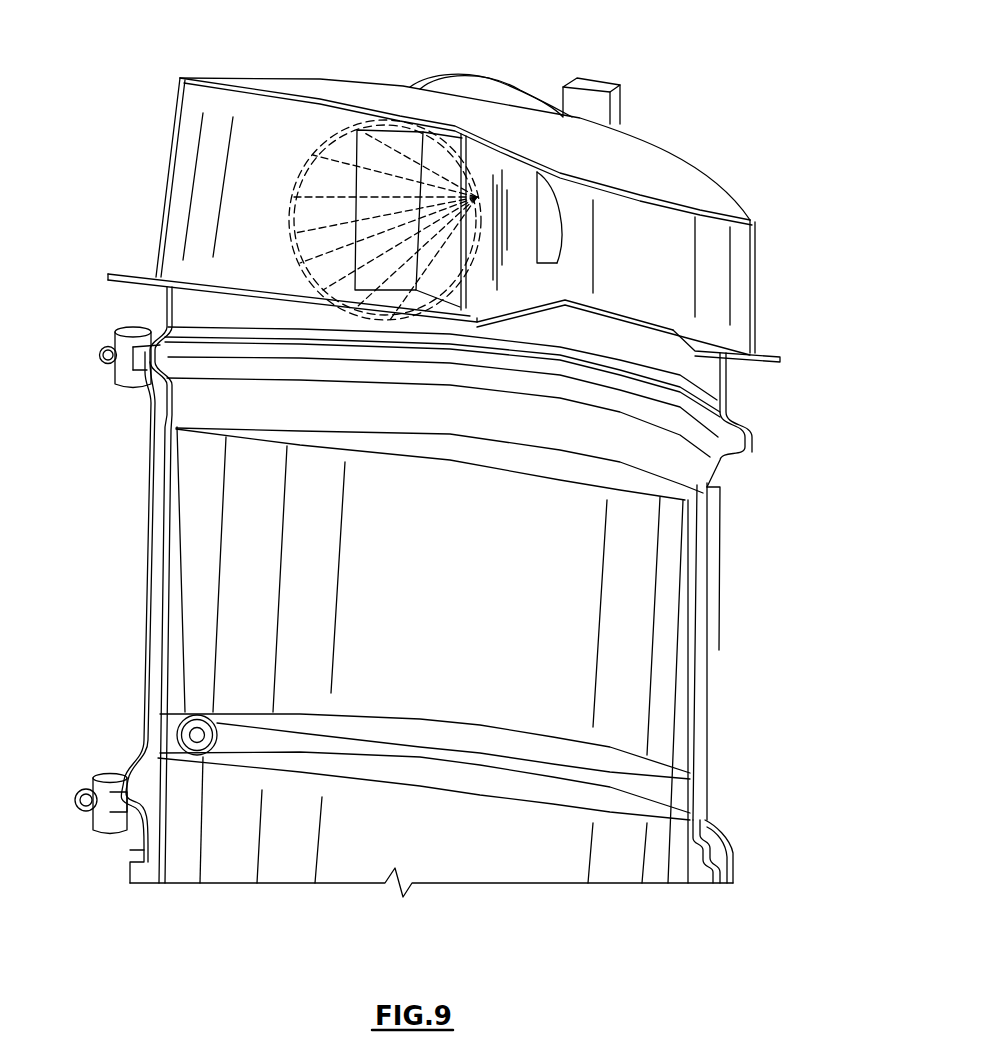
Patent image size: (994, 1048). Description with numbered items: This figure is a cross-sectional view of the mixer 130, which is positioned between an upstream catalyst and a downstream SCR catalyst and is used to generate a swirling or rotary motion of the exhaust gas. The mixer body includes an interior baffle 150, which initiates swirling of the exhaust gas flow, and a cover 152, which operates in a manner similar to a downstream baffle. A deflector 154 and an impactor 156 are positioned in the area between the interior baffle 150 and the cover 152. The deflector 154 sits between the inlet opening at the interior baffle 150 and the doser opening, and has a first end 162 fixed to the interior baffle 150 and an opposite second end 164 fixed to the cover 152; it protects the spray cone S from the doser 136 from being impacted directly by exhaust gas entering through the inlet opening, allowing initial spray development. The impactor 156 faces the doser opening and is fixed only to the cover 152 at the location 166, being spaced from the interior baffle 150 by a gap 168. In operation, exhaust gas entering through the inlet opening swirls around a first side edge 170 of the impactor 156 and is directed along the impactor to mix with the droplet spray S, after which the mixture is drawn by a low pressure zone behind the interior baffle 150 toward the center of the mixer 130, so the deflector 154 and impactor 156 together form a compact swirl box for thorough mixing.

The mixer 130 is at (787, 234).
The doser 136 is at (155, 568).
The interior baffle 150 is at (452, 318).
The cover 152 is at (553, 138).
The deflector 154 is at (520, 192).
The impactor 156 is at (373, 182).
The first end 162 is at (513, 289).
The second end 164 is at (483, 162).
The impactor attachment to cover 166 is at (365, 112).
The gap 168 is at (363, 300).
The first side edge 170 is at (357, 210).
The spray cone S is at (340, 146).